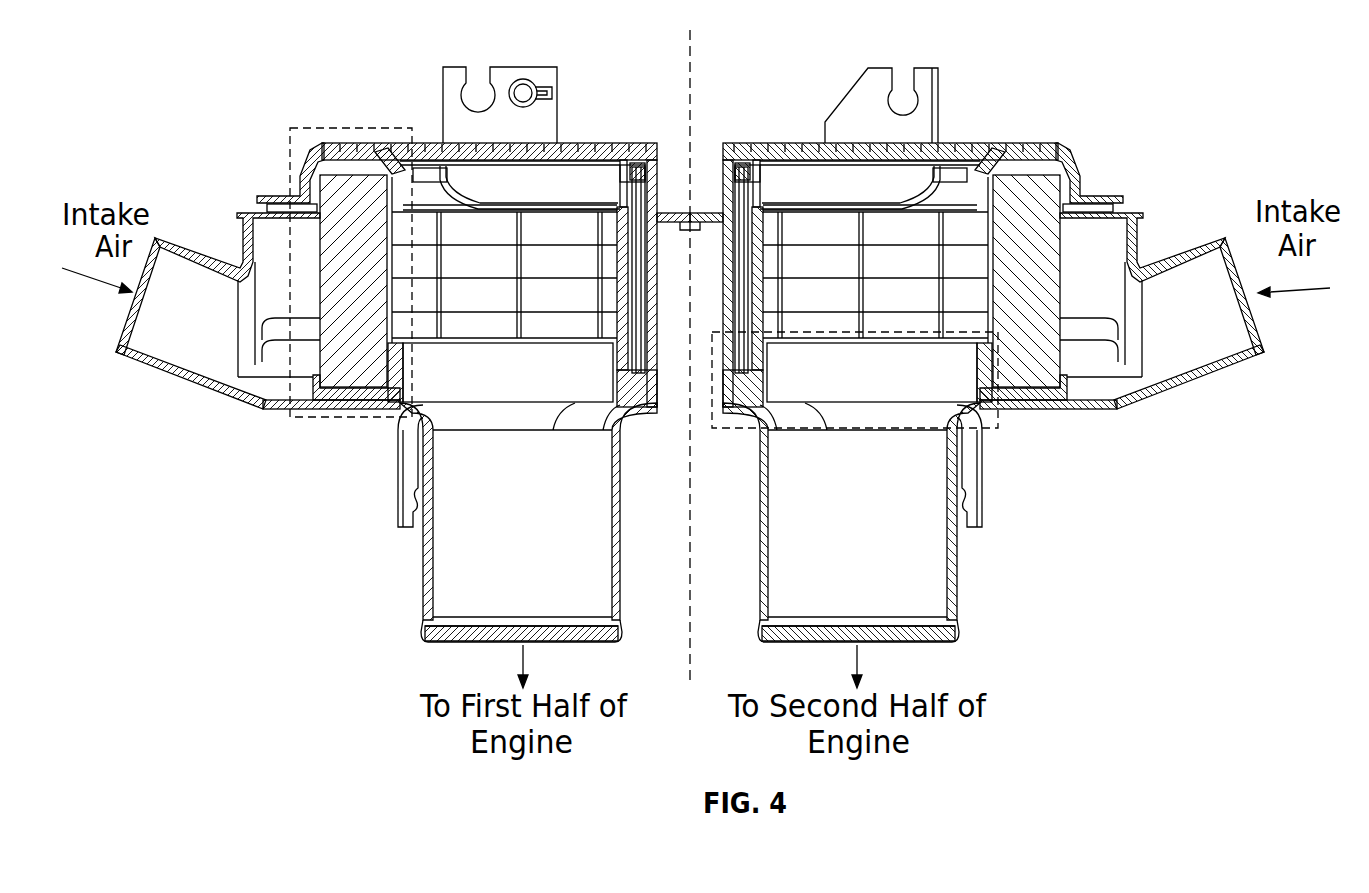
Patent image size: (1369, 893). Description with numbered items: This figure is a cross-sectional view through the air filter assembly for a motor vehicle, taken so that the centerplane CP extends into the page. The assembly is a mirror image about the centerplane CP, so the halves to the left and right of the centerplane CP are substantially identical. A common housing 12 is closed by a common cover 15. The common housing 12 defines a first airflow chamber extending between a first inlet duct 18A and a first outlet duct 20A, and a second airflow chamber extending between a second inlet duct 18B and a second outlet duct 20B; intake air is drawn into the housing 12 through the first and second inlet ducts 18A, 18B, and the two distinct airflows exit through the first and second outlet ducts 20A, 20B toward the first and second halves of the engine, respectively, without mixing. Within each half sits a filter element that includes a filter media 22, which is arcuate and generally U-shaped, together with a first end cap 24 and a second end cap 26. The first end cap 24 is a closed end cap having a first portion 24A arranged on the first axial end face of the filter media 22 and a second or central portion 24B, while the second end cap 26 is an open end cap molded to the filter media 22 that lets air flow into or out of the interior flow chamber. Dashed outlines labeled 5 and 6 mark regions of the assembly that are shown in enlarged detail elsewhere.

The detail region of FIG. 5 is at (338, 128).
The detail region of FIG. 6 is at (998, 428).
The common housing 12 is at (413, 548).
The common cover 15 is at (1037, 147).
The first inlet duct 18A is at (184, 250).
The second inlet duct 18B is at (1206, 258).
The first outlet duct 20A is at (423, 598).
The second outlet duct 20B is at (955, 605).
The filter media 22 is at (343, 287).
The first end cap 24 is at (1020, 154).
The first portion of the first end cap 24A is at (977, 143).
The second portion or central portion of the first end cap 24B is at (880, 200).
The second end cap 26 is at (1040, 408).
The centerplane CP is at (698, 70).